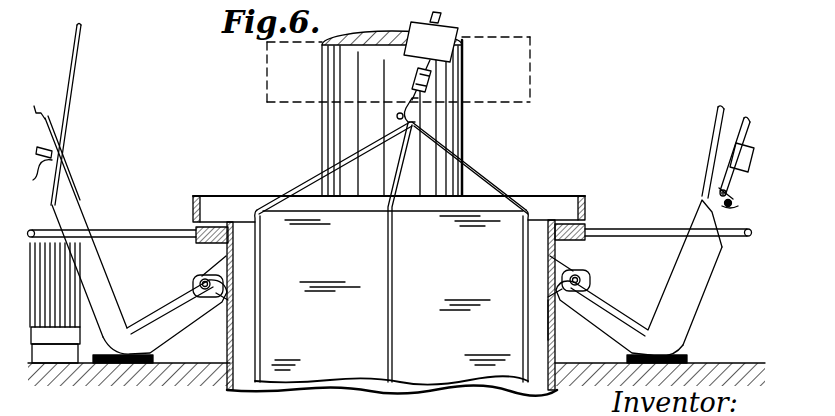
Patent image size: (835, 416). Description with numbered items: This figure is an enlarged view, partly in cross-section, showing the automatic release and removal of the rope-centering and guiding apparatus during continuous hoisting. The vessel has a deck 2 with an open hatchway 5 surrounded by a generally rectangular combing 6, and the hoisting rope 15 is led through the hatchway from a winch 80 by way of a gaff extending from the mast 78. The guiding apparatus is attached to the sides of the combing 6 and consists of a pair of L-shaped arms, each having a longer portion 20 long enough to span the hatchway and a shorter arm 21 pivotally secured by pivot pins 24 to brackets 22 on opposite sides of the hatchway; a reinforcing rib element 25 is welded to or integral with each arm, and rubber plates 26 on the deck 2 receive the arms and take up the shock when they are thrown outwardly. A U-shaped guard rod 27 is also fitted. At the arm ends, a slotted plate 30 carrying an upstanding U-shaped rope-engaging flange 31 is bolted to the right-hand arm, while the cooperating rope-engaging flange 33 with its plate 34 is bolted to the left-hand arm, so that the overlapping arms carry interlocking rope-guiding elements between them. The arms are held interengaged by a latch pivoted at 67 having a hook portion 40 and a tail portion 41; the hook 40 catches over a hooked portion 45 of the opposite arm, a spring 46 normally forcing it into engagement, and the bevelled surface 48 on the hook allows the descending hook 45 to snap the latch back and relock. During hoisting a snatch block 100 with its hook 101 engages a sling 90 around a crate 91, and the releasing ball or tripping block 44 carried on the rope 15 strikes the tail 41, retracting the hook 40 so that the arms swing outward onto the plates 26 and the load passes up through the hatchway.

The deck 2 is at (735, 363).
The hatchway 5 is at (248, 360).
The combing 6 is at (555, 333).
The hoisting rope 15 is at (72, 82).
The longer portion of arm 20 is at (86, 212).
The shorter arm 21 is at (160, 314).
The brackets 22 is at (221, 268).
The pivot pins 24 is at (198, 286).
The reinforcing rib element 25 is at (103, 315).
The rubber plates 26 is at (155, 360).
The U-shaped guard rod 27 is at (142, 228).
The slotted plate 30 is at (747, 140).
The rope-engaging flange 31 is at (754, 152).
The rope-engaging flange 33 is at (40, 171).
The plate 34 is at (60, 167).
The hook portion of latch 40 is at (737, 202).
The tail portion of latch 41 is at (712, 148).
The releasing ball 44 is at (443, 45).
The hooked portion 45 is at (36, 110).
The spring 46 is at (733, 207).
The bevel 48 is at (731, 194).
The latch pivot 67 is at (732, 192).
The mast 78 is at (337, 125).
The winch 80 is at (66, 313).
The sling 90 is at (386, 222).
The crate 91 is at (440, 357).
The snatch block 100 is at (428, 79).
The hook of snatch block 101 is at (420, 117).